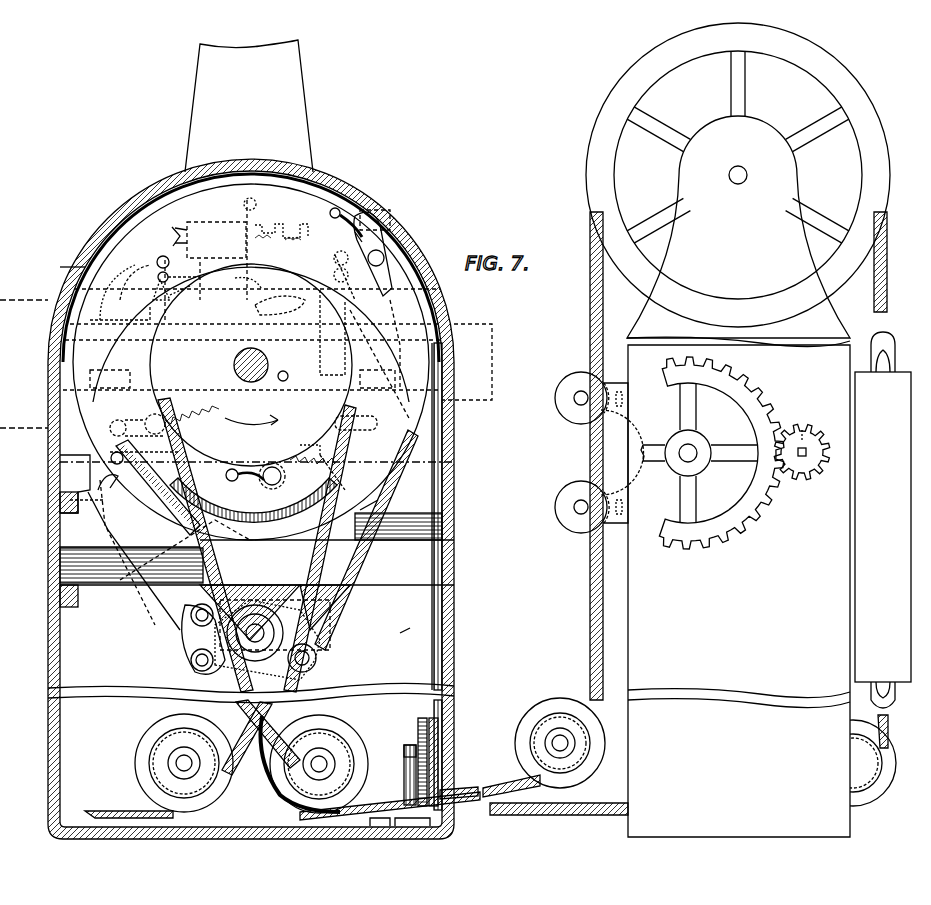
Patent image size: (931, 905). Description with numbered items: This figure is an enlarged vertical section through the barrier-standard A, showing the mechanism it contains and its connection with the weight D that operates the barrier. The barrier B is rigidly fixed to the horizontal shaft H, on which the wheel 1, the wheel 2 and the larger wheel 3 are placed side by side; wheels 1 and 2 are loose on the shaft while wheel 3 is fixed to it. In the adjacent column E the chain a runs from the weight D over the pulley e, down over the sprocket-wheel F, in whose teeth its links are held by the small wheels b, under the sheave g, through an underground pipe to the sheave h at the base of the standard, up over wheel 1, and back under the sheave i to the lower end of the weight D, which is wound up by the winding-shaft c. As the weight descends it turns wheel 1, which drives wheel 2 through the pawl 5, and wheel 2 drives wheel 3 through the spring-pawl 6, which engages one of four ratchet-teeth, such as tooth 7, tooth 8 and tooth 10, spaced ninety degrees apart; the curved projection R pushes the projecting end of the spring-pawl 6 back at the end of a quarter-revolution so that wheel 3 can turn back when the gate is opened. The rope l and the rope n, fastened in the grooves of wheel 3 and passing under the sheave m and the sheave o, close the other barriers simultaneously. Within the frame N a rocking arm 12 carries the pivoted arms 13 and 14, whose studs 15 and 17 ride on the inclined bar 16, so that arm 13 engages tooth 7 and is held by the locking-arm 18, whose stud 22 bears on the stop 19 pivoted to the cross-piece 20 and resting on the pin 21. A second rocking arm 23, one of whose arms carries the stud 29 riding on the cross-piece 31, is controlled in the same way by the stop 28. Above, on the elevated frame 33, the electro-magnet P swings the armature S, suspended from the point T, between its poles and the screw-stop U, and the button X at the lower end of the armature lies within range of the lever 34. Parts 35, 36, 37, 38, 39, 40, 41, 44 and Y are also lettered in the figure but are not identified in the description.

The barrier-standard A is at (251, 499).
The barrier B is at (249, 106).
The curved projection R is at (72, 268).
The wheel 2 is at (251, 383).
The shaft H is at (257, 365).
The pin 44 is at (290, 377).
The wheel 1 is at (251, 411).
The electro-magnet P is at (210, 240).
The ratchet-tooth 8 is at (169, 236).
The suspension point T is at (255, 205).
The adjustable screw-stop U is at (281, 227).
The spring-pawl 6 is at (361, 252).
The armature S is at (358, 231).
The link 39 is at (354, 282).
The rollers 38 is at (346, 269).
The pivot 37 is at (163, 259).
The lever 34 is at (179, 274).
The pawl 36 is at (161, 290).
The link 35 is at (181, 288).
The arm Y is at (135, 282).
The elevated frame 33 is at (120, 292).
The button X is at (248, 285).
The cam plate 41 is at (280, 304).
The slide 40 is at (330, 332).
The wheel 3 is at (381, 370).
The cross-piece 20 is at (257, 451).
The bar 16 is at (257, 527).
The cross-piece 31 is at (251, 548).
The stud 22 is at (115, 424).
The pivoted stop 28 is at (145, 425).
The stud 15 is at (145, 452).
The arm 13 is at (144, 535).
The frame N is at (87, 507).
The stud 17 is at (185, 550).
The pawl 5 is at (255, 481).
The stud 29 is at (377, 502).
The pivoted stop 19 is at (356, 423).
The pin 21 is at (310, 453).
The ratchet-tooth 10 is at (260, 488).
The chain a is at (529, 516).
The locking-arm 18 is at (275, 610).
The ratchet-tooth 7 is at (272, 635).
The rocking arm 12 is at (257, 633).
The rocking arm 23 is at (203, 639).
The arm 14 is at (316, 645).
The rope n is at (405, 628).
The sheave m is at (184, 763).
The sheave h is at (312, 722).
The rope l is at (129, 807).
The sheave o is at (404, 772).
The pulley e is at (738, 175).
The column E is at (738, 476).
The sprocket-wheel F is at (572, 461).
The winding-shaft c is at (826, 428).
The small wheel b is at (593, 452).
The weight D is at (883, 520).
The sheave g is at (558, 743).
The sheave i is at (853, 763).